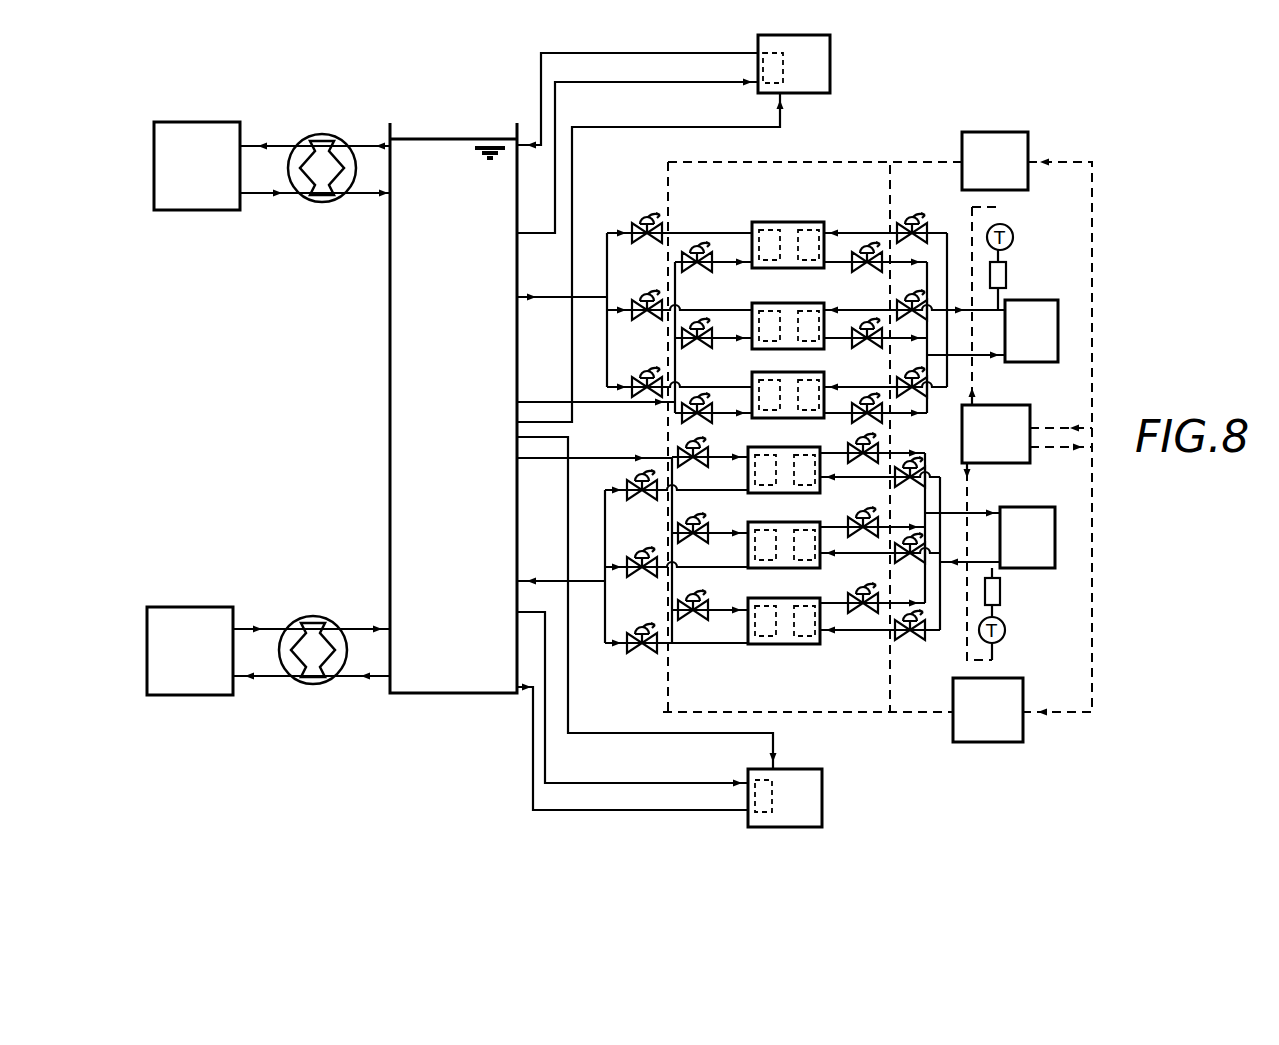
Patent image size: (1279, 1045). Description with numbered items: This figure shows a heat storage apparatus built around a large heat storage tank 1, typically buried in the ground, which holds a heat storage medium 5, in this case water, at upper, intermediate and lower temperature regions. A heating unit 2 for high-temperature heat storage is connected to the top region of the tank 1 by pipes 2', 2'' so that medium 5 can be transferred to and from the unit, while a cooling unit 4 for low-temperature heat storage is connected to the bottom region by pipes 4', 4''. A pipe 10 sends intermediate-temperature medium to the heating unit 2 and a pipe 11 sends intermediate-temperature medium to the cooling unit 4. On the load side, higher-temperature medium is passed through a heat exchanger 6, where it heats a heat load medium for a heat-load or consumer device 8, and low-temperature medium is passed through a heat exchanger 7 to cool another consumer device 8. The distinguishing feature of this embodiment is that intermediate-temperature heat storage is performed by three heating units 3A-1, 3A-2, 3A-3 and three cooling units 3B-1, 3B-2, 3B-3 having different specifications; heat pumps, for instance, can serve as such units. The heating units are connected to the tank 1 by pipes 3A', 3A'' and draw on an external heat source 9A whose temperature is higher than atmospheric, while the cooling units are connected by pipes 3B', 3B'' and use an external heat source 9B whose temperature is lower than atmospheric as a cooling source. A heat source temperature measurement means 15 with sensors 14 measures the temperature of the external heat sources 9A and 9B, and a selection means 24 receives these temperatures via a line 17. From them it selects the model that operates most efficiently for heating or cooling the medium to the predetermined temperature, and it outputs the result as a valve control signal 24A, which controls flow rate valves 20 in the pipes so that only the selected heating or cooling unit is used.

The heat storage tank 1 is at (388, 425).
The heating unit for high-temperature heat storage 2 is at (810, 55).
The pipe 2' is at (637, 156).
The pipe 2'' is at (637, 86).
The cooling unit for low-temperature heat storage 4 is at (801, 798).
The pipe 4' is at (632, 699).
The pipe 4'' is at (632, 767).
The heat storage medium 5 is at (461, 148).
The heat exchanger 6 is at (312, 203).
The heat exchanger 7 is at (323, 613).
The heat-load or consumer device 8 is at (187, 204).
The external heat source 9A is at (1022, 300).
The external heat source 9B is at (1035, 566).
The pipe 10 is at (783, 118).
The pipe 11 is at (775, 740).
The sensor 14 is at (1010, 228).
The heat source temperature measurement means 15 is at (1018, 464).
The line 17 is at (1080, 160).
The flow rate valve 20 is at (648, 212).
The selection means 24 is at (978, 133).
The valve control signal 24A is at (885, 160).
The pipe 3A' is at (561, 391).
The pipe 3A'' is at (527, 315).
The pipe 3B' is at (594, 436).
The pipe 3B'' is at (522, 561).
The heating unit 3A-1 is at (788, 233).
The heating unit 3A-2 is at (788, 314).
The heating unit 3A-3 is at (822, 376).
The cooling unit 3B-1 is at (784, 484).
The cooling unit 3B-2 is at (784, 560).
The cooling unit 3B-3 is at (784, 636).